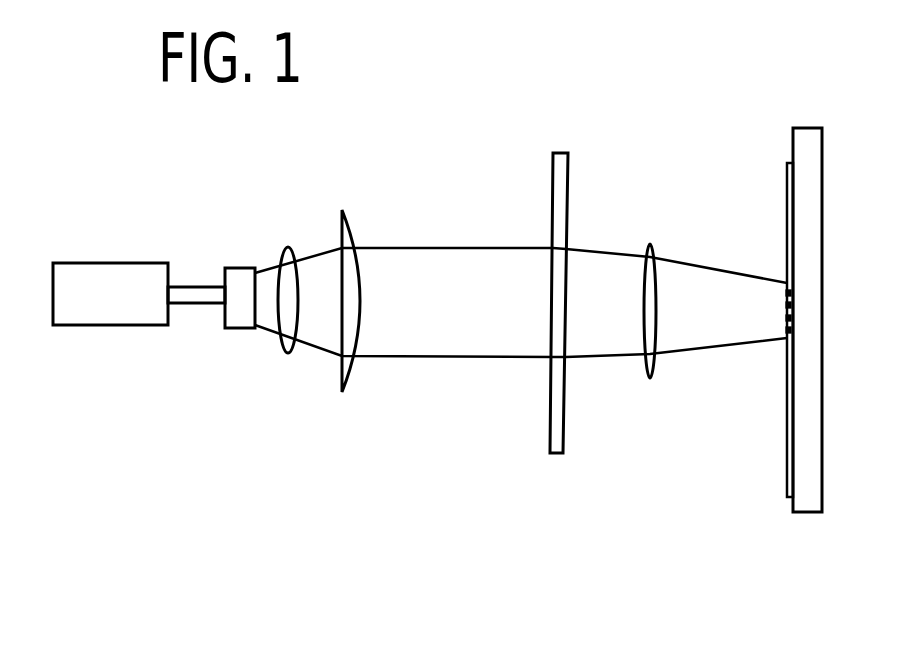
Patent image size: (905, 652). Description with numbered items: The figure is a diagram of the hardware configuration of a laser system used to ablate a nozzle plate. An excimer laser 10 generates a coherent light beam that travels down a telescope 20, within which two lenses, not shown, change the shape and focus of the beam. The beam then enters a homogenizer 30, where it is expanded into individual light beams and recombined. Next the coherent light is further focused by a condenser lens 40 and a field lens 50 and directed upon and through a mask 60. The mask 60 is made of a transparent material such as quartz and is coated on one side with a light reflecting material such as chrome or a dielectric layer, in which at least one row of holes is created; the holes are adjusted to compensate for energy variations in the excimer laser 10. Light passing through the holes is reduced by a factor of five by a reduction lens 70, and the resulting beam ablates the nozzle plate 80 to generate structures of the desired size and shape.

The excimer laser 10 is at (120, 316).
The telescope 20 is at (197, 303).
The homogenizer 30 is at (242, 268).
The condenser lens 40 is at (290, 355).
The field lens 50 is at (347, 240).
The mask 60 is at (560, 170).
The reduction lens 70 is at (653, 235).
The nozzle plate 80 is at (787, 490).